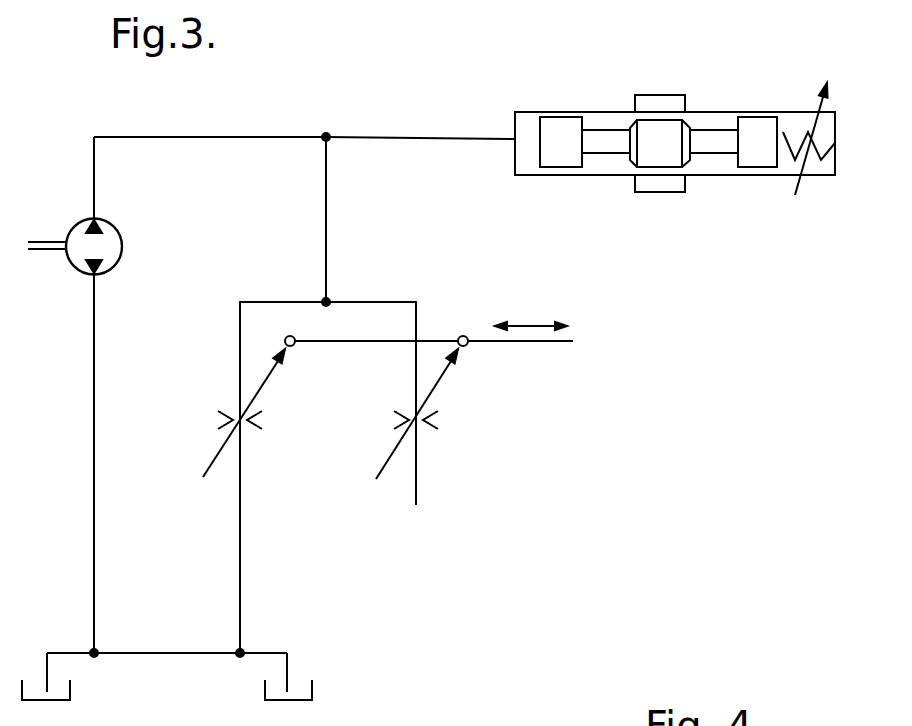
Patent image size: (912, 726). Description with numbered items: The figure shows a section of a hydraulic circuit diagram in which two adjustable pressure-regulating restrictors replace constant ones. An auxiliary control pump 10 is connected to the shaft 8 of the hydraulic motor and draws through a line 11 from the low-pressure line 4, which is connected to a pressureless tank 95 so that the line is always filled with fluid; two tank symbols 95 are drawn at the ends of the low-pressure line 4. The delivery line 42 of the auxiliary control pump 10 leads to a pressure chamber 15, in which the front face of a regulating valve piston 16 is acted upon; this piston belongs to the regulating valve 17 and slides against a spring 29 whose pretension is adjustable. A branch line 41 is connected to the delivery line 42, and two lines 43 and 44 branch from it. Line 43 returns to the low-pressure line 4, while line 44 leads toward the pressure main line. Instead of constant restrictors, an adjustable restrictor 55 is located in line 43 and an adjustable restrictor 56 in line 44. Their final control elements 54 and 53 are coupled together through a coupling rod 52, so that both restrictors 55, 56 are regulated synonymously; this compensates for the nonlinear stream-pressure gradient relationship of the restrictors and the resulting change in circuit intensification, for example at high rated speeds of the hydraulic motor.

The low-pressure line 4 is at (172, 652).
The shaft 8 is at (50, 241).
The auxiliary control pump 10 is at (122, 246).
The line 11 is at (95, 408).
The pressure chamber 15 is at (527, 114).
The regulating valve piston 16 is at (650, 128).
The regulating valve 17 is at (612, 176).
The spring 29 is at (800, 132).
The branch line 41 is at (328, 200).
The delivery line 42 is at (221, 137).
The line 43 is at (265, 302).
The line 44 is at (365, 302).
The coupling rod 52 is at (378, 341).
The final control element 53 is at (440, 386).
The final control element 54 is at (265, 386).
The adjustable restrictor 55 is at (258, 424).
The adjustable restrictor 56 is at (433, 424).
The tank 95 is at (60, 700).